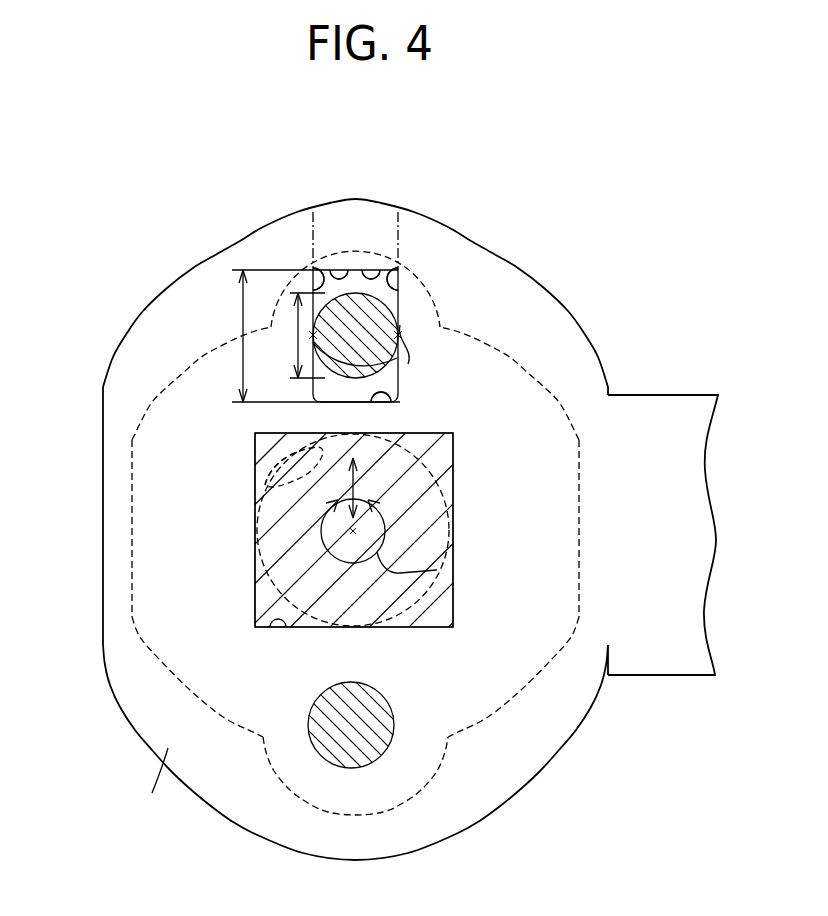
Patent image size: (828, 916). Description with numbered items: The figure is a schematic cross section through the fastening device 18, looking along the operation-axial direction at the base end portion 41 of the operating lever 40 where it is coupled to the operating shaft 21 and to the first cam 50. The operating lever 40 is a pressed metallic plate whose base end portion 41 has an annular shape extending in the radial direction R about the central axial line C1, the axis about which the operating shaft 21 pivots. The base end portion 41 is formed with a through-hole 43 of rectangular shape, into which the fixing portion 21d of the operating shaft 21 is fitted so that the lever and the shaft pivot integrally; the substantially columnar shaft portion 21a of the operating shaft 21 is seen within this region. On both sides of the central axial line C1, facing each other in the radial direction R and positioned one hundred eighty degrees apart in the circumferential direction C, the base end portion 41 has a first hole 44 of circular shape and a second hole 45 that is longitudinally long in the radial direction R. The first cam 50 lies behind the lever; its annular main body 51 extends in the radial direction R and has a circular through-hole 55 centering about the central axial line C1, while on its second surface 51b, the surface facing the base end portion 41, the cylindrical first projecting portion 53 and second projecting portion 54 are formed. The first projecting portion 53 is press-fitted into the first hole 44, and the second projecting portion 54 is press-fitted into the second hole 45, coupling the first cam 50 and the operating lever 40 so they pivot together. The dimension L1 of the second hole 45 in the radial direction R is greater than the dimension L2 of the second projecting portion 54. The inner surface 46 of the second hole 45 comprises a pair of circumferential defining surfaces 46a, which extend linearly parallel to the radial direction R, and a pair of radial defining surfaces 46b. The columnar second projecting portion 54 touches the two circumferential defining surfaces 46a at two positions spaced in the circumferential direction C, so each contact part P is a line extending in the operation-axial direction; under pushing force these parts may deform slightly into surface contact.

The fastening device 18 is at (532, 210).
The operating lever 40 is at (211, 804).
The base end portion 41 is at (150, 785).
The through-hole 43 is at (289, 630).
The first hole 44 is at (393, 720).
The second hole 45 is at (373, 268).
The inner surface 46 is at (355, 335).
The circumferential defining surfaces 46a is at (400, 266).
The radial defining surfaces 46b is at (341, 270).
The first cam 50 is at (396, 306).
The main body 51 is at (131, 448).
The second surface 51b is at (152, 481).
The first projecting portion 53 is at (356, 754).
The second projecting portion 54 is at (378, 326).
The through-hole 55 is at (288, 478).
The operating shaft 21 is at (255, 524).
The shaft portion 21a is at (268, 596).
The fixing portion 21d is at (262, 565).
The contact part P is at (398, 356).
The dimension of the second hole in the radial direction L1 is at (302, 336).
The dimension of the second projecting portion in the radial direction L2 is at (291, 335).
The radial direction R is at (358, 482).
The circumferential direction C is at (437, 570).
The central axial line C1 is at (375, 530).